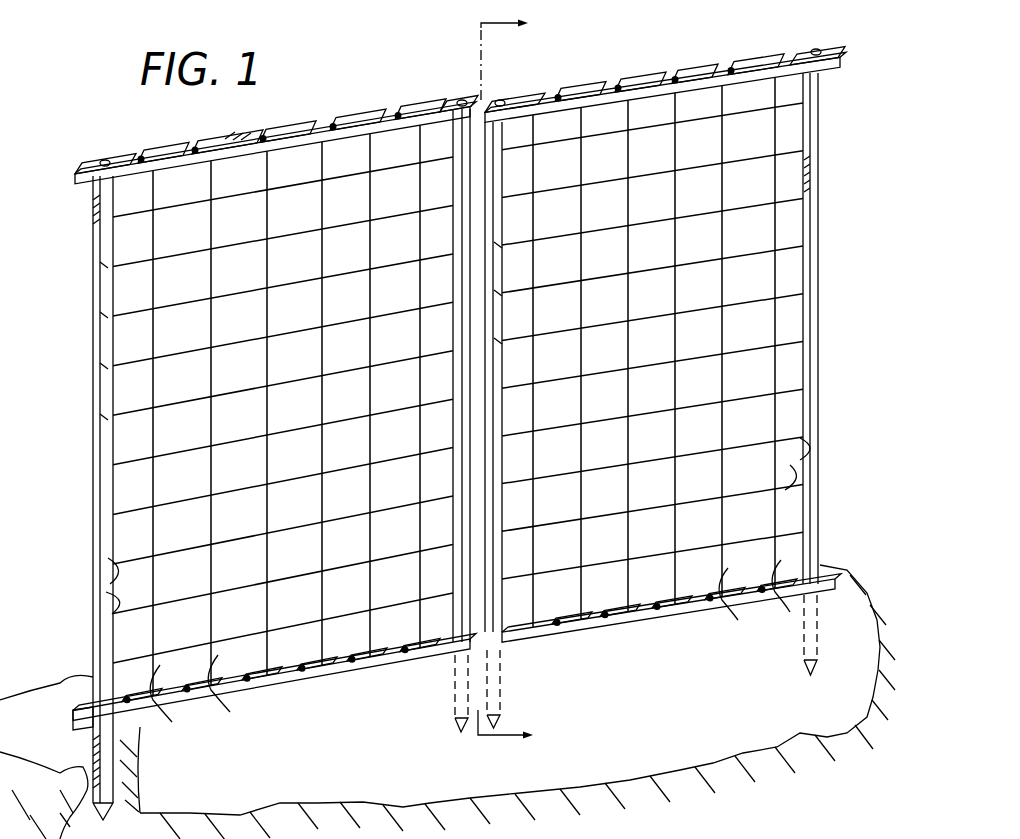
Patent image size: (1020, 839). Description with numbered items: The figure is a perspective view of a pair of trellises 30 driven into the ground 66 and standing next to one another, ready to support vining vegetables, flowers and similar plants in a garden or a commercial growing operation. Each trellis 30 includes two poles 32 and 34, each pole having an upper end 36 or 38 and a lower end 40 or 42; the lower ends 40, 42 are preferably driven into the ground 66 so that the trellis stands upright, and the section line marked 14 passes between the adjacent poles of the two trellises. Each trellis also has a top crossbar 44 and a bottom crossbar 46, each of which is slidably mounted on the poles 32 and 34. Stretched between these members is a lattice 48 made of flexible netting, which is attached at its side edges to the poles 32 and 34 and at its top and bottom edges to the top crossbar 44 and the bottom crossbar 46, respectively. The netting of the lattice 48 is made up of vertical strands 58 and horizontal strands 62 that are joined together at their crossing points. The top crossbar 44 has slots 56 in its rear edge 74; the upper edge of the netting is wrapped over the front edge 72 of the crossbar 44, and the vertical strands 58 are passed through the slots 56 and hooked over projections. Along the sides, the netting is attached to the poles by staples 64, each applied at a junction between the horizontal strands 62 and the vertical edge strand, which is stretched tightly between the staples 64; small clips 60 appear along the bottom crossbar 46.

The section line 14- 14 is at (520, 375).
The trellis 30 is at (105, 125).
The pole 32 is at (93, 240).
The pole 34 is at (455, 187).
The upper end 36 is at (110, 157).
The upper end 38 is at (462, 98).
The lower end 40 is at (503, 682).
The lower end 42 is at (452, 692).
The top crossbar 44 is at (270, 128).
The bottom crossbar 46 is at (280, 698).
The lattice 48 is at (122, 492).
The slots 56 is at (395, 110).
The vertical strands 58 is at (172, 722).
The bottom rail clip 60 is at (275, 678).
The horizontal strands 62 is at (105, 600).
The staples 64 is at (97, 410).
The ground 66 is at (876, 620).
The front edge 72 is at (305, 132).
The rear edge 74 is at (210, 138).